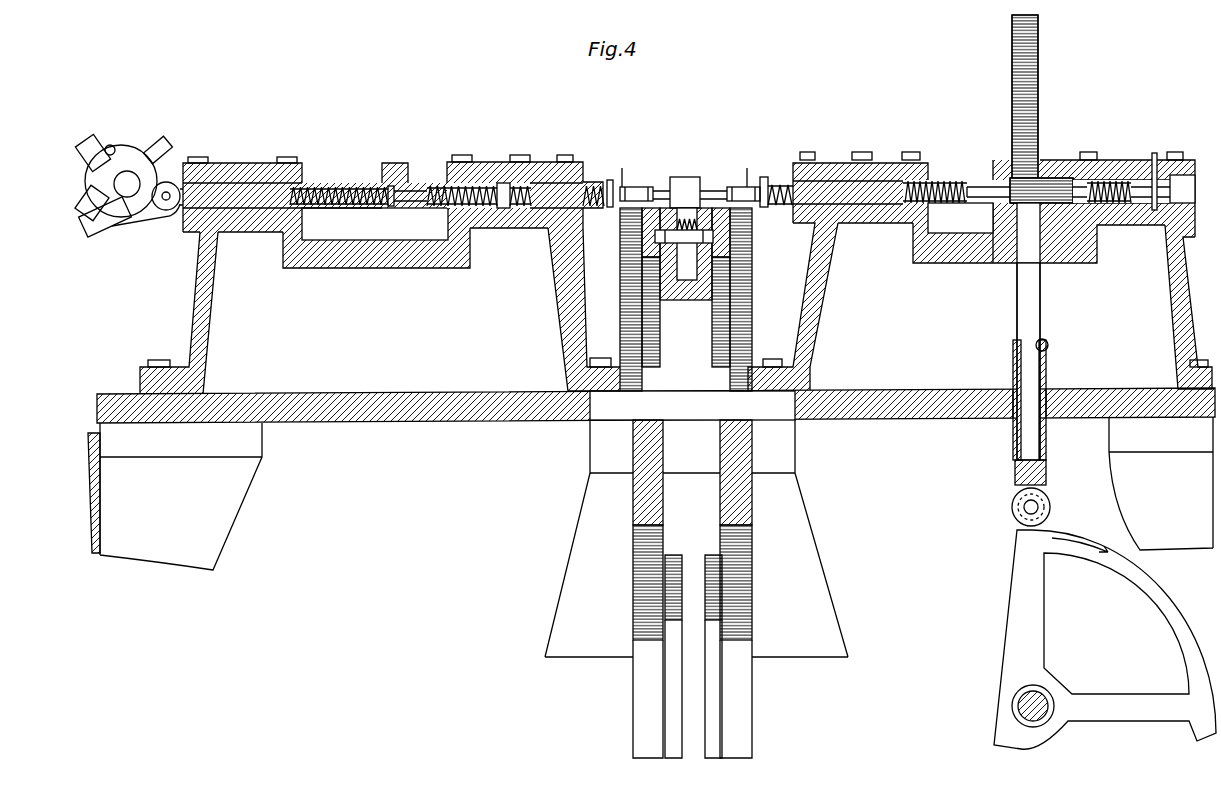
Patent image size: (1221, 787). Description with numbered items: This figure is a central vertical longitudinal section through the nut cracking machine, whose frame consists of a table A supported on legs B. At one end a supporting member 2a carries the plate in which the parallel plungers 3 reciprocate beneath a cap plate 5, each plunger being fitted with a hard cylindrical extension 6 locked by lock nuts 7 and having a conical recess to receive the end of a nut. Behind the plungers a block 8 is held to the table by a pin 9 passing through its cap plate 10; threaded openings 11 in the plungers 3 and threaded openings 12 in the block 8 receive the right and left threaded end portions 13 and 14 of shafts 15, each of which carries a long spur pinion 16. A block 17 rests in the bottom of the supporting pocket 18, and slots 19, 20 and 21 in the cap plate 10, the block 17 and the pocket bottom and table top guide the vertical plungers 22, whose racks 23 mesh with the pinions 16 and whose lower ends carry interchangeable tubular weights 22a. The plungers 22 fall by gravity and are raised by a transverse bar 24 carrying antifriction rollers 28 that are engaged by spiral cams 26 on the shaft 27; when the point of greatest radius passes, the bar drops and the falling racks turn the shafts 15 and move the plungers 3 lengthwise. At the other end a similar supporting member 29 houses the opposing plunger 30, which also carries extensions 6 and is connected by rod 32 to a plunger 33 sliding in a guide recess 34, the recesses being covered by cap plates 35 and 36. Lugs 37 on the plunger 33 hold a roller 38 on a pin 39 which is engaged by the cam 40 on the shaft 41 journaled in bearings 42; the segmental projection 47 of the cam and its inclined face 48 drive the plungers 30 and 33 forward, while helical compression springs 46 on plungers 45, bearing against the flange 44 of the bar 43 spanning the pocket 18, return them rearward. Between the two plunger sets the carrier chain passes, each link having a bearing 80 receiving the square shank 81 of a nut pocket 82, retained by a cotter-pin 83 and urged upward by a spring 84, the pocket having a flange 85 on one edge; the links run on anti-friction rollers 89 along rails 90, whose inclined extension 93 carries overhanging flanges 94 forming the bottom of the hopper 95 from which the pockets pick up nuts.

The supporting member 2a is at (1180, 285).
The plungers 3 is at (879, 200).
The cap plate 5 is at (832, 167).
The cylindrical extension 6 is at (653, 180).
The lock nuts 7 is at (610, 178).
The block 8 is at (1185, 188).
The pin 9 is at (1156, 160).
The cap plate 10 is at (1186, 160).
The threaded openings 11 is at (925, 178).
The threaded openings 12 is at (1130, 160).
The right threaded end portion 13 is at (973, 188).
The left threaded end portion 14 is at (1104, 180).
The shafts 15 is at (992, 186).
The spur pinion 16 is at (1046, 177).
The block 17 is at (1097, 240).
The supporting pocket 18 is at (410, 255).
The slot 19 is at (1013, 182).
The slot 20 is at (1040, 235).
The slot 21 is at (1048, 395).
The plungers 22 is at (1017, 322).
The interchangeable tubular weights 22a is at (1050, 343).
The rack 23 is at (1040, 45).
The bar 24 is at (1048, 475).
The cams 26 is at (1176, 624).
The shaft 27 is at (1018, 706).
The antifriction rollers 28 is at (1052, 508).
The supporting member 29 is at (210, 316).
The plunger 30 is at (562, 163).
The rod 32 is at (493, 229).
The plate or plunger 33 is at (243, 170).
The guide recess 34 is at (310, 205).
The cap plate 35 is at (495, 160).
The cap plate 36 is at (283, 158).
The parallel lugs 37 is at (236, 232).
The anti-friction roller 38 is at (167, 212).
The pin 39 is at (188, 172).
The cam 40 is at (84, 162).
The shaft 41 is at (115, 210).
The bearings 42 is at (118, 232).
The bar 43 is at (400, 163).
The plate or flange 44 is at (390, 205).
The plungers 45 is at (412, 212).
The helical compression springs 46 is at (332, 183).
The segmental projection 47 is at (108, 144).
The inclined face 48 is at (172, 152).
The bearing 80 is at (714, 218).
The square shank 81 is at (640, 266).
The pocket 82 is at (686, 177).
The cotter-pin 83 is at (715, 238).
The helical compression spring 84 is at (703, 178).
The flange 85 is at (675, 177).
The anti-friction rollers 89 is at (640, 243).
The rails 90 is at (752, 268).
The extended portion 93 is at (575, 272).
The overhanging flanges 94 is at (640, 190).
The hopper 95 is at (620, 178).
The table A is at (385, 421).
The legs B is at (252, 500).